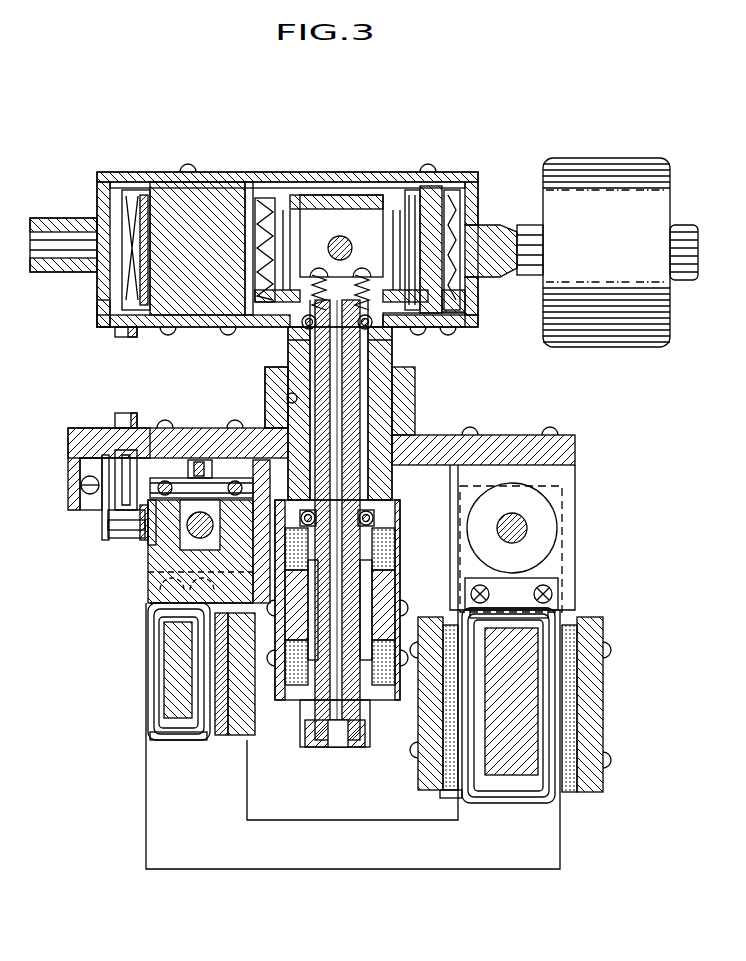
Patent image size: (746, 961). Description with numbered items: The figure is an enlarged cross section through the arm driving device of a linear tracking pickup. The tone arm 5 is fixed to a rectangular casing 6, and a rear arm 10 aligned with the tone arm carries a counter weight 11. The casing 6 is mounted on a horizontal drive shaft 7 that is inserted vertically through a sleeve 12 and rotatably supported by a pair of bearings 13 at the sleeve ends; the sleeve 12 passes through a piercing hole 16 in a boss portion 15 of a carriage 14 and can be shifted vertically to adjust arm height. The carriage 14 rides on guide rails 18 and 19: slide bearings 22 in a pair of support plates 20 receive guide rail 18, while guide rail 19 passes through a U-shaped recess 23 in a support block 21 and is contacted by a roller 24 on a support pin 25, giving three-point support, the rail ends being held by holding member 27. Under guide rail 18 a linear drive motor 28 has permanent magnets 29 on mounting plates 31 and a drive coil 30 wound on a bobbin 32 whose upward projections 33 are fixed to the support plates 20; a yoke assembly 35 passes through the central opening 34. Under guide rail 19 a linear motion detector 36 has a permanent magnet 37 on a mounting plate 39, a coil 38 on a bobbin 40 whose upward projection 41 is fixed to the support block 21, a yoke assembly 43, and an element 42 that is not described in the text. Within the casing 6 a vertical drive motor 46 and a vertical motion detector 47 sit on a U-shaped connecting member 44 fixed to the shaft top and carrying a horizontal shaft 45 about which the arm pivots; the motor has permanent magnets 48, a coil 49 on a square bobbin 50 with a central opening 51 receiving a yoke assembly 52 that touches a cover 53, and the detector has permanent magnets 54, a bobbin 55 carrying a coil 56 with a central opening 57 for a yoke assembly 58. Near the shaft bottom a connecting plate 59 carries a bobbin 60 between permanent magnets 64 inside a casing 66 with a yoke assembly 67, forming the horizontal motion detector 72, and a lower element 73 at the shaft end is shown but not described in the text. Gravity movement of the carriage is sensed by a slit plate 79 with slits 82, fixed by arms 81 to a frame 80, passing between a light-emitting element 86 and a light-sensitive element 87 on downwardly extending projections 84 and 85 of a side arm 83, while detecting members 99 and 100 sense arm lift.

The tone arm 5 is at (60, 230).
The casing 6 is at (208, 322).
The horizontal drive shaft 7 is at (356, 388).
The rear arm 10 is at (522, 240).
The counter weight 11 is at (610, 195).
The sleeve 12 is at (382, 362).
The bearings 13 is at (358, 326).
The carriage 14 is at (190, 440).
The boss portion 15 is at (270, 374).
The piercing hole 16 is at (270, 394).
The guide rail 18 is at (527, 523).
The guide rail 19 is at (172, 562).
The support plates 20 is at (565, 480).
The support block 21 is at (178, 590).
The slide bearings 22 is at (542, 540).
The U-shaped recess 23 is at (186, 522).
The roller 24 is at (196, 460).
The support pin 25 is at (216, 485).
The holding member 27 is at (430, 866).
The linear drive motor 28 is at (510, 829).
The permanent magnets 29 is at (572, 680).
The drive coil 30 is at (503, 635).
The mounting plates 31 is at (590, 714).
The bobbin 32 is at (522, 790).
The upward projections 33 is at (520, 597).
The central opening 34 is at (442, 796).
The yoke assembly 35 is at (515, 654).
The linear motion detector 36 is at (188, 770).
The permanent magnet 37 is at (222, 736).
The coil 38 is at (160, 676).
The mounting plate 39 is at (242, 706).
The bobbin 40 is at (156, 735).
The upward projection 41 is at (236, 556).
The coil former 42 is at (167, 700).
The yoke assembly 43 is at (178, 650).
The connecting member 44 is at (340, 215).
The shaft 45 is at (350, 243).
The vertical drive motor 46 is at (169, 146).
The vertical motion detector 47 is at (443, 147).
The permanent magnets 48 is at (143, 192).
The coil 49 is at (268, 205).
The bobbin 50 is at (248, 183).
The central opening 51 is at (98, 314).
The yoke assembly 52 is at (215, 205).
The cover 53 is at (315, 180).
The permanent magnets 54 is at (435, 195).
The bobbin 55 is at (440, 320).
The coil 56 is at (448, 200).
The central opening 57 is at (472, 294).
The yoke assembly 58 is at (432, 165).
The connecting plate 59 is at (394, 560).
The bobbin 60 is at (284, 586).
The permanent magnets 64 is at (396, 530).
The casing 66 is at (262, 528).
The yoke assembly 67 is at (394, 586).
The horizontal motion detector 72 is at (342, 462).
The lower nut 73 is at (320, 740).
The slit plate 79 is at (122, 522).
The frame 80 is at (143, 532).
The arms 81 is at (150, 540).
The slits 82 is at (100, 465).
The side arm 83 is at (85, 438).
The downwardly extending projection 84 is at (74, 496).
The downwardly extending projection 85 is at (122, 512).
The light-emitting element 86 is at (80, 486).
The light-sensitive element 87 is at (118, 470).
The detecting member 99 is at (125, 412).
The detecting member 100 is at (116, 333).